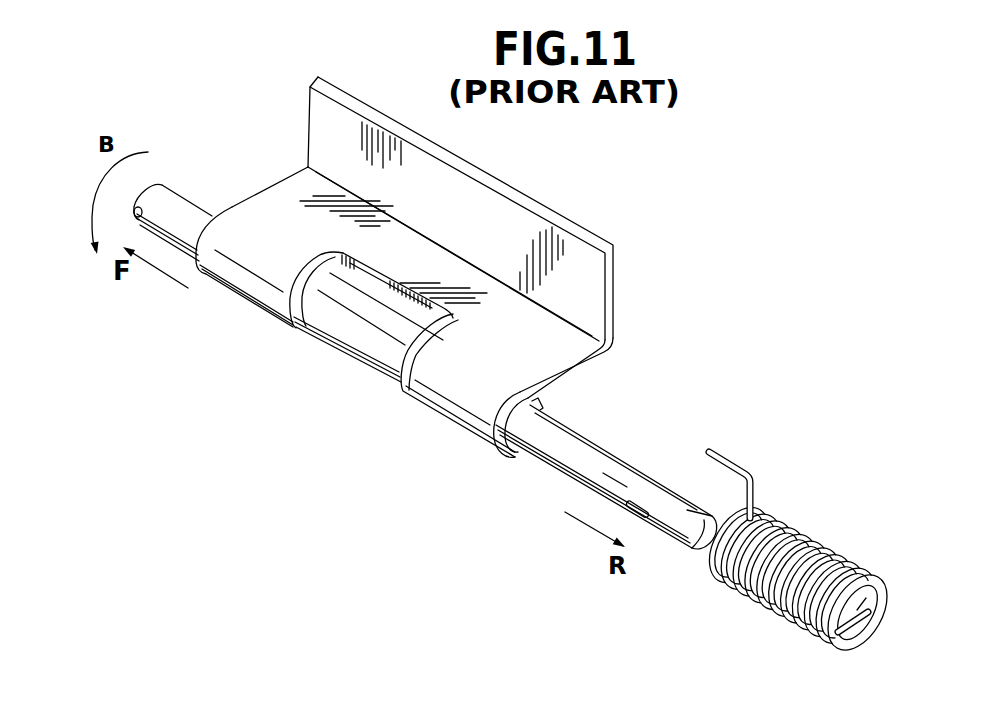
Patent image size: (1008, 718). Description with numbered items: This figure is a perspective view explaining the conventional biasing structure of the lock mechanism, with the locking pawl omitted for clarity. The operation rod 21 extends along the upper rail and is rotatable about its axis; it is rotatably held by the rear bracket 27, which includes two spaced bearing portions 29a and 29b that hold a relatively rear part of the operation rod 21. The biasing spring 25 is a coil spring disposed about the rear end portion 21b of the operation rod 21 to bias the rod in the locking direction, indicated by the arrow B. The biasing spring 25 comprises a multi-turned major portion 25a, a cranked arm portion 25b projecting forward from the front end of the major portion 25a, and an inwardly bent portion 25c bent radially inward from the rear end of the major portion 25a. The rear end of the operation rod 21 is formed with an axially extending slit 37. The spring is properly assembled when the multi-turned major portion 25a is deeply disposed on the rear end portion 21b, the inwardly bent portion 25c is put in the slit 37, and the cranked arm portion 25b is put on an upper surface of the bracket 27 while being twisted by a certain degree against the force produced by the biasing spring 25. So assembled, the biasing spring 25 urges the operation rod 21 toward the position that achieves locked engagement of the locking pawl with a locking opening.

The operation rod 21 is at (425, 399).
The rear end portion of the operation rod 21b is at (550, 457).
The biasing spring 25 is at (798, 559).
The multi-turned major portion 25a is at (807, 555).
The cranked arm portion 25b is at (733, 468).
The inwardly bent portion 25c is at (847, 642).
The rear bracket 27 is at (575, 255).
The bearing portion 29a is at (247, 287).
The bearing portion 29b is at (452, 412).
The slit 37 is at (662, 527).